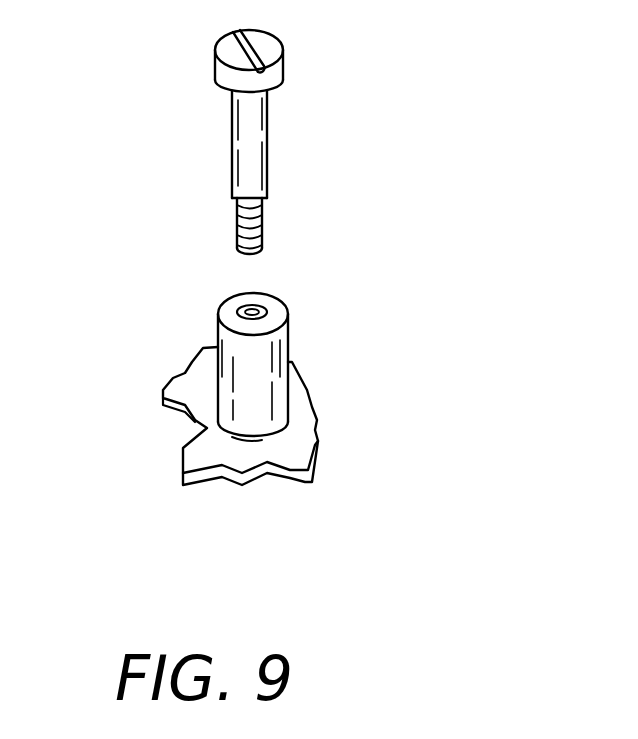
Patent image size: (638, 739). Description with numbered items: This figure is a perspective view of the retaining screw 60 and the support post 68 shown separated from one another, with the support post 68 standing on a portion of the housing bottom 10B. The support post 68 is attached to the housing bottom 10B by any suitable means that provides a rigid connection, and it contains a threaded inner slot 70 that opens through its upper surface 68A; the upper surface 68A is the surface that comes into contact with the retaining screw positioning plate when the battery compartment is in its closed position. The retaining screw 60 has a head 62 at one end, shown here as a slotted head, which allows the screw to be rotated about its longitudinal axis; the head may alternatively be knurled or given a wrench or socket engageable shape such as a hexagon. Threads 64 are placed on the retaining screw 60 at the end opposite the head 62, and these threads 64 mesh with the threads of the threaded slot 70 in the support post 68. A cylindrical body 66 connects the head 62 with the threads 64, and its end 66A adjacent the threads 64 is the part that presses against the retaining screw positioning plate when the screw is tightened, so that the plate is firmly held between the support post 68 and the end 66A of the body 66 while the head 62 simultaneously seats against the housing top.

The retaining screw 60 is at (295, 155).
The head 62 is at (265, 40).
The threads 64 is at (262, 225).
The cylindrical body 66 is at (243, 133).
The end of body 66A is at (237, 200).
The support post 68 is at (241, 366).
The upper surface of support post 68A is at (222, 308).
The threaded inner slot 70 is at (255, 311).
The housing bottom 10B is at (295, 442).